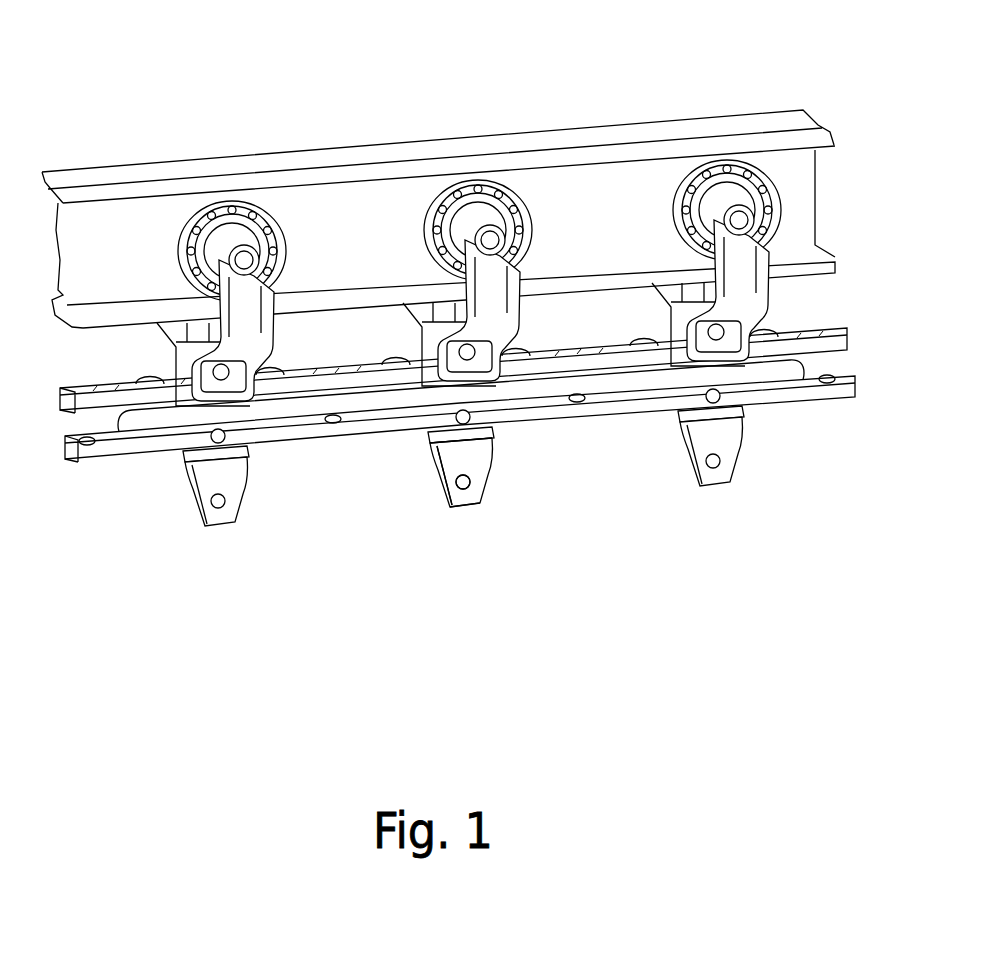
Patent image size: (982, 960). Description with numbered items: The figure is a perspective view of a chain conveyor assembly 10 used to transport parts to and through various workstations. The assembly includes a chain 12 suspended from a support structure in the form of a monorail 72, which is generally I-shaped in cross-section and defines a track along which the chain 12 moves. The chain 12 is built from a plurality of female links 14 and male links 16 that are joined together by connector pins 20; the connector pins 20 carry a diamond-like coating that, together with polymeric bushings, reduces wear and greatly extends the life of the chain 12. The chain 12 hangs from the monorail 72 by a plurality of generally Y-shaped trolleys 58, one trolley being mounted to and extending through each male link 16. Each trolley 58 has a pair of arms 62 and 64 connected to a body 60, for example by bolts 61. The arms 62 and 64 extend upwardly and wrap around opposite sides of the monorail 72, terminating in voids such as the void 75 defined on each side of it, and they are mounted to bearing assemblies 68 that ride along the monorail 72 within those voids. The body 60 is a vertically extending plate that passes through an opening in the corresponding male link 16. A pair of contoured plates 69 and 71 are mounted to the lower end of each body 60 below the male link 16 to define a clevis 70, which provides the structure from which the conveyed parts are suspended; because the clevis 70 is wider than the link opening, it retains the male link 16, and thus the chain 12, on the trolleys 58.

The chain conveyor assembly 10 is at (448, 353).
The chain 12 is at (457, 443).
The female links 14 is at (320, 387).
The male links 16 is at (182, 416).
The connector pins 20 is at (150, 385).
The trolleys 58 is at (517, 545).
The body 60 is at (422, 430).
The bolts 61 is at (490, 430).
The arm 62 is at (412, 320).
The arm 64 is at (500, 336).
The bearing assemblies 68 is at (490, 180).
The contoured plate 69 is at (440, 497).
The clevis 70 is at (506, 515).
The contoured plate 71 is at (451, 530).
The monorail 72 is at (367, 195).
The void 75 is at (600, 223).